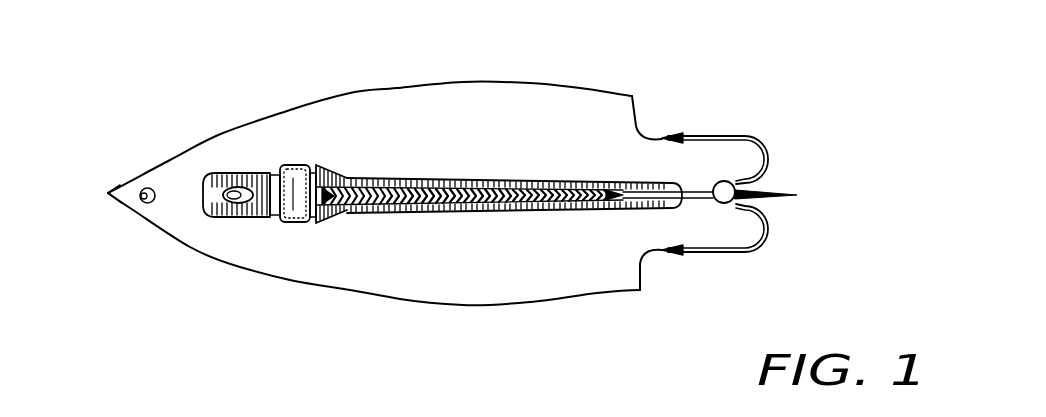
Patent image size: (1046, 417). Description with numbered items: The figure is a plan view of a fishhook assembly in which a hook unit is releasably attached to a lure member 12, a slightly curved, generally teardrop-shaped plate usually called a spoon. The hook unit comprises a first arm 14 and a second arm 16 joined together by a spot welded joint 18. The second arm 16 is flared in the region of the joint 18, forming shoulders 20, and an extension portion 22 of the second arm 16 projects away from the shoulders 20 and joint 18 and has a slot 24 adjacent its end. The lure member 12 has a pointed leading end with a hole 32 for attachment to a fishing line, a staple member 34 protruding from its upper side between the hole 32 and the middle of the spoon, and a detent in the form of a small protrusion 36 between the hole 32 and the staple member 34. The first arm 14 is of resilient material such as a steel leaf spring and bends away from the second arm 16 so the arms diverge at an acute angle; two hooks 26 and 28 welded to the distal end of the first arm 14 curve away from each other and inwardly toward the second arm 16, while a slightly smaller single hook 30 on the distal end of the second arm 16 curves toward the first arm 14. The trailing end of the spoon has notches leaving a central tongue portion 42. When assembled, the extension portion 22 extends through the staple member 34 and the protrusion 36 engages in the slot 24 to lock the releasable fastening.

The lure member 12 is at (398, 88).
The first arm 14 is at (513, 211).
The second arm 16 is at (643, 208).
The spot welded joint 18 is at (346, 212).
The shoulders 20 is at (308, 168).
The extension portion 22 is at (253, 216).
The slot 24 is at (232, 216).
The hook 26 is at (745, 137).
The hook 28 is at (749, 252).
The single hook 30 is at (776, 190).
The hole 32 is at (130, 208).
The staple member 34 is at (293, 183).
The protrusion 36 is at (250, 173).
The tongue portion 42 is at (677, 168).